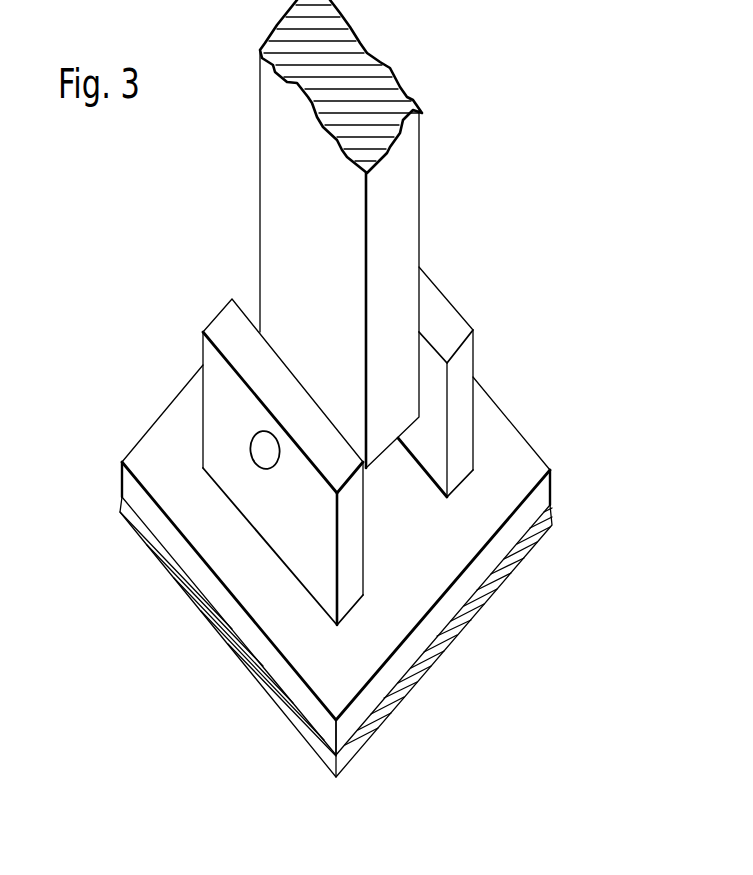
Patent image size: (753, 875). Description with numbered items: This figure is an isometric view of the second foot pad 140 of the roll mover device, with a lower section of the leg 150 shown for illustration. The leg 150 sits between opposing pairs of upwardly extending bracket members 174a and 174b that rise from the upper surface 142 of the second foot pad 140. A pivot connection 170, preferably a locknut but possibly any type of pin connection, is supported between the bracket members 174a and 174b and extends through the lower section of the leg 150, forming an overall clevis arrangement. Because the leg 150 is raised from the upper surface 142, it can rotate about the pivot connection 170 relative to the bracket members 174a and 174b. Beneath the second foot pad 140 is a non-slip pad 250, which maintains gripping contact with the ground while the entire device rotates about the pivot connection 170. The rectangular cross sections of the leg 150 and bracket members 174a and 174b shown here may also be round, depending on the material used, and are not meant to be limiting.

The second foot pad 140 is at (399, 560).
The upper surface 142 is at (445, 548).
The leg 150 is at (403, 203).
The pivot connection 170 is at (257, 453).
The bracket member 174a is at (189, 435).
The bracket member 174b is at (448, 320).
The non-slip pad 250 is at (418, 683).